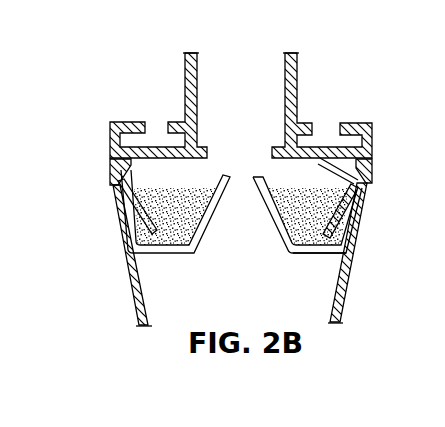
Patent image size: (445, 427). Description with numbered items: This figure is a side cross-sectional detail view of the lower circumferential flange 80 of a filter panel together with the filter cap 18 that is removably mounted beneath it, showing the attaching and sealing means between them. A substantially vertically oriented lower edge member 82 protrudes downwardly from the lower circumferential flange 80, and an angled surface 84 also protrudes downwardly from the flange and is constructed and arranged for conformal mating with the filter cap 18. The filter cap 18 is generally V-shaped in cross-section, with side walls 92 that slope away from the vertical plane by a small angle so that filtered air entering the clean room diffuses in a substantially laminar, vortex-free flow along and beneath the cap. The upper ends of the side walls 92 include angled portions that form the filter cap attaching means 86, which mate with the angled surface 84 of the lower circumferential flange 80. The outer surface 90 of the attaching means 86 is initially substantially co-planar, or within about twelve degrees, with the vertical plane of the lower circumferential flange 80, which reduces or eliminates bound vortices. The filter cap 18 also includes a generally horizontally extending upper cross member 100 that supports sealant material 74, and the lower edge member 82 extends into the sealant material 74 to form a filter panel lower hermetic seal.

The lower circumferential flange 80 is at (358, 123).
The filter cap attaching means 86 is at (115, 173).
The filter cap 18 is at (132, 291).
The angled surface 84 is at (132, 161).
The outer surface 90 is at (372, 170).
The side walls 92 is at (343, 305).
The lower edge member 82 is at (320, 188).
The sealant material 74 is at (298, 213).
The upper cross member 100 is at (308, 253).